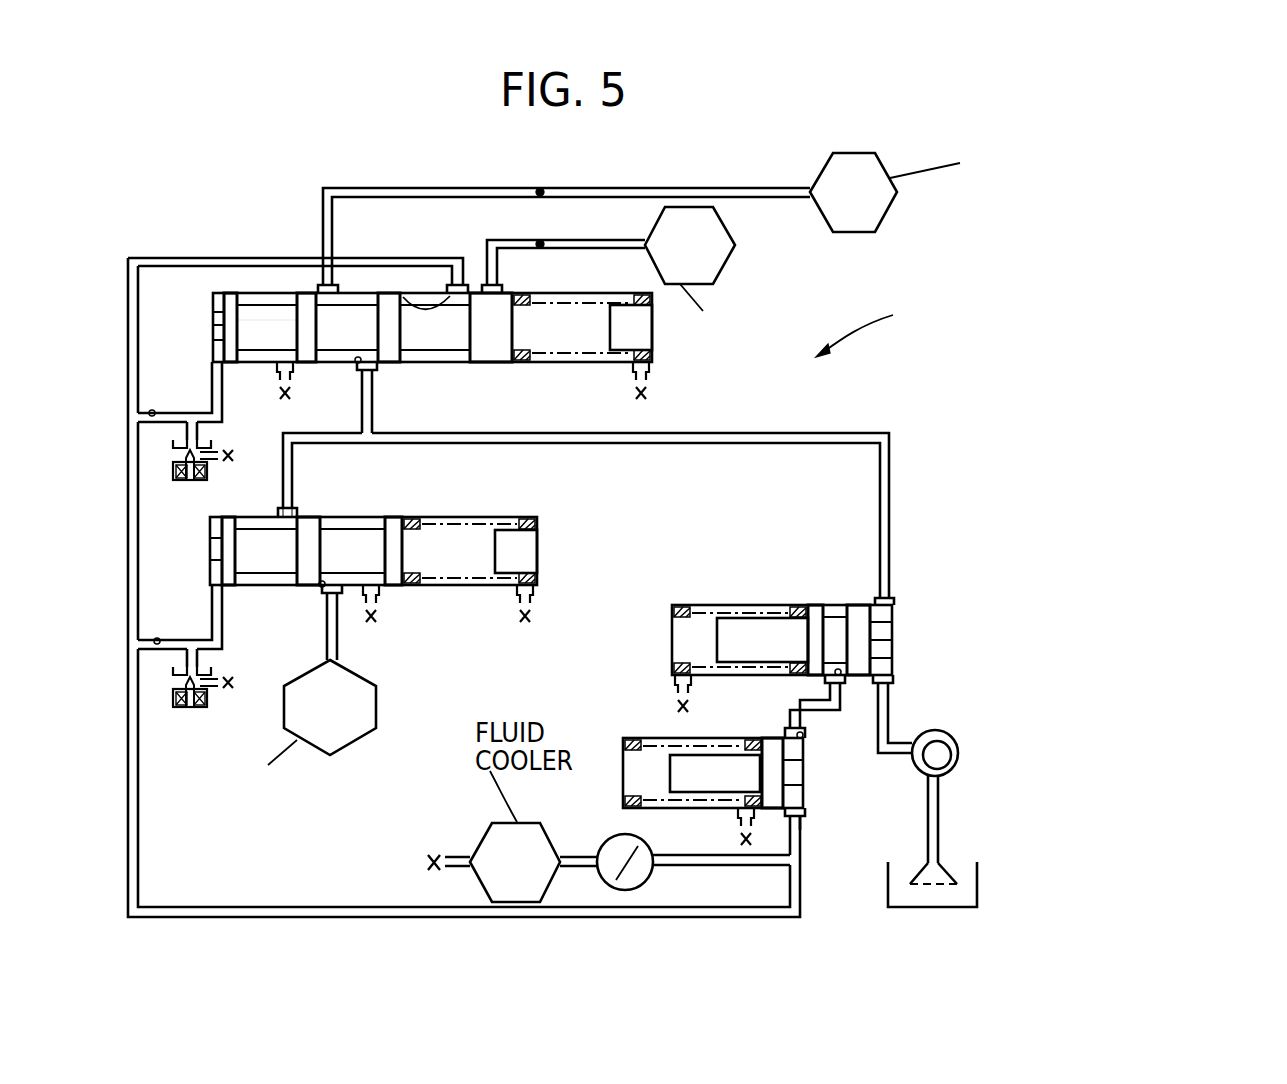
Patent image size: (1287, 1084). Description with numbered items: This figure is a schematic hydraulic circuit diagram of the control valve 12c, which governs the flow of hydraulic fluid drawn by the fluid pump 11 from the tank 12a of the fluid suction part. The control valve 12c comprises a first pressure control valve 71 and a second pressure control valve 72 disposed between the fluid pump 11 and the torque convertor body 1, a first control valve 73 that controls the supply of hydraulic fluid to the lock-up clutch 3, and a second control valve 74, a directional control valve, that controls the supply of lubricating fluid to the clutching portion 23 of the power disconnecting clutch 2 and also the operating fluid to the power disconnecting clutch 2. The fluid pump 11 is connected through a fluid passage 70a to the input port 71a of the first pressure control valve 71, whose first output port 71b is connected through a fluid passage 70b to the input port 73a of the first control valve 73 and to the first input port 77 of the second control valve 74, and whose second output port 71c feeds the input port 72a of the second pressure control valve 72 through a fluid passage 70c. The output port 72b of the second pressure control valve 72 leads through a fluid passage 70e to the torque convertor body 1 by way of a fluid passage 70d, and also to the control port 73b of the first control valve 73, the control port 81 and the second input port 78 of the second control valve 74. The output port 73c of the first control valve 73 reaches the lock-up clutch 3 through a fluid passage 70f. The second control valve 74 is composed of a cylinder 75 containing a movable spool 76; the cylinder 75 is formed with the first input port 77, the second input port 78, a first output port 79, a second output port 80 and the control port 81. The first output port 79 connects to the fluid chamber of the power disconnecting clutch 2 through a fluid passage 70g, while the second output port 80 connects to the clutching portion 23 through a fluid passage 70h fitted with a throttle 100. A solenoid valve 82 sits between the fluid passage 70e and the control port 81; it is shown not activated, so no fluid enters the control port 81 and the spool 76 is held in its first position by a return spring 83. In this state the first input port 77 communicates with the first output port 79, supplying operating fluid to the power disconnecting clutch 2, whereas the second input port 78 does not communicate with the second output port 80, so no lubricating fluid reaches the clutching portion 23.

The torque convertor body 1 is at (604, 840).
The power disconnecting clutch 2 is at (847, 153).
The lock-up clutch 3 is at (353, 673).
The fluid pump 11 is at (958, 755).
The tank 12a is at (978, 872).
The control valve 12c is at (881, 321).
The clutching portion 23 is at (728, 262).
The fluid passage 70a is at (890, 688).
The fluid passage 70b is at (891, 453).
The fluid passage 70c is at (790, 706).
The fluid passage 70d is at (694, 857).
The fluid passage 70e is at (302, 906).
The fluid passage 70f is at (327, 641).
The fluid passage 70g is at (382, 190).
The fluid passage 70h is at (487, 246).
The first pressure control valve 71 is at (840, 676).
The input port 71a is at (893, 661).
The first output port 71b is at (893, 608).
The second output port 71c is at (841, 676).
The second pressure control valve 72 is at (745, 801).
The input port 72a is at (803, 738).
The output port 72b is at (801, 813).
The first control valve 73 is at (432, 549).
The input port 73a is at (287, 516).
The control port 73b is at (213, 587).
The output port 73c is at (316, 585).
The second control valve 74 is at (483, 294).
The cylinder 75 is at (440, 362).
The spool 76 is at (323, 337).
The first input port 77 is at (355, 362).
The second input port 78 is at (402, 295).
The first output port 79 is at (315, 293).
The second output port 80 is at (510, 313).
The control port 81 is at (215, 352).
The solenoid valve 82 is at (175, 473).
The return spring 83 is at (538, 362).
The throttle 100 is at (553, 242).